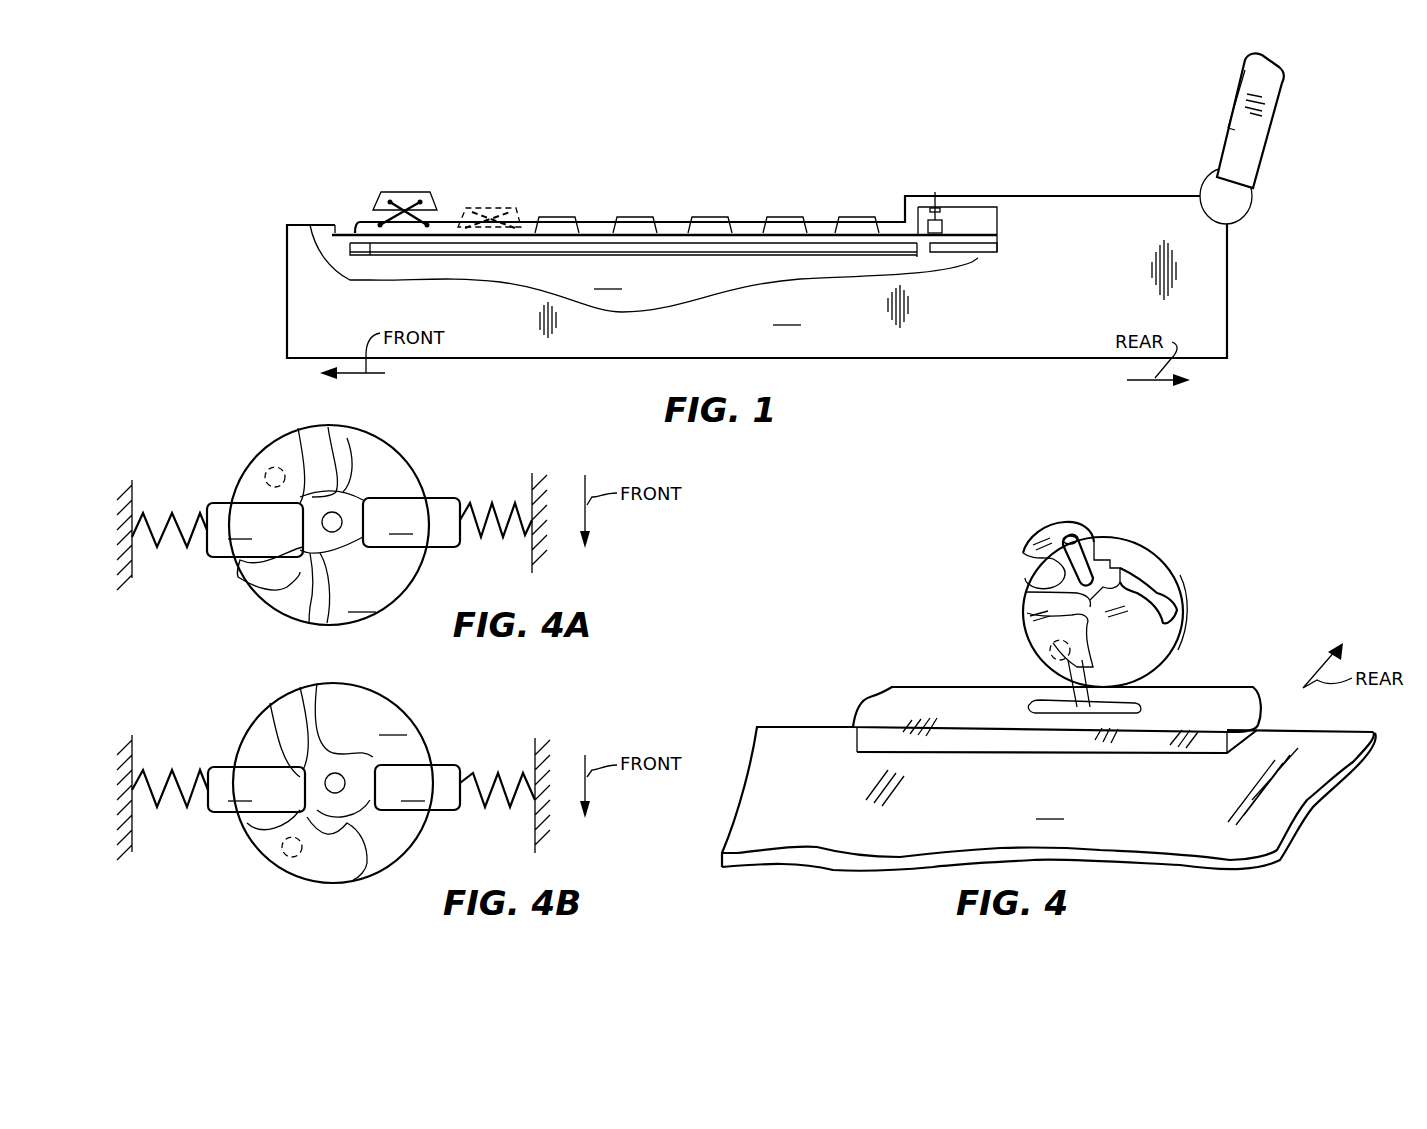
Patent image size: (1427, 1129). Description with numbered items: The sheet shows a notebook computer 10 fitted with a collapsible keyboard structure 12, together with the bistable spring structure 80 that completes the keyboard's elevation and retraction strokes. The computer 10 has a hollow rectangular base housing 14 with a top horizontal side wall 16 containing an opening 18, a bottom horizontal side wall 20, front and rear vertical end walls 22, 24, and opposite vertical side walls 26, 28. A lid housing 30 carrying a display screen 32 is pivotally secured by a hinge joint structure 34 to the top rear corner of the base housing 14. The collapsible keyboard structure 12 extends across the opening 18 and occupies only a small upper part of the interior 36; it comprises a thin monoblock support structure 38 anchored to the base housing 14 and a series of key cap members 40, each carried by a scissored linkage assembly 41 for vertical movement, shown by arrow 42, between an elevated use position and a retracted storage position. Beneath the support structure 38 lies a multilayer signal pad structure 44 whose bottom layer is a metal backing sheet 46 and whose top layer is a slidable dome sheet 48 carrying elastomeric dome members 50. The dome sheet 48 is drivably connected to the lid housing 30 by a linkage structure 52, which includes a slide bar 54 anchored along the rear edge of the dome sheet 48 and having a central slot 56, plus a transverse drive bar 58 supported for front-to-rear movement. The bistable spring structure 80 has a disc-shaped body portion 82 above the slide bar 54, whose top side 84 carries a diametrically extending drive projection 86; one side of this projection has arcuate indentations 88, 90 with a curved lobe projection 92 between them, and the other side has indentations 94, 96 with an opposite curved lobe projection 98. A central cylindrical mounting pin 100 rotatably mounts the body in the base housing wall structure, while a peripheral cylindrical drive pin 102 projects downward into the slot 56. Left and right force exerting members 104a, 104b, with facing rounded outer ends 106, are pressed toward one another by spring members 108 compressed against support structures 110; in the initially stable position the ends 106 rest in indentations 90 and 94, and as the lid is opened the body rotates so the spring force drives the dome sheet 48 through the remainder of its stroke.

In FIG. 1, the notebook computer 10 is at (1290, 266).
In FIG. 1, the collapsible keyboard structure 12 is at (680, 182).
In FIG. 1, the base housing 14 is at (283, 288).
In FIG. 1, the top horizontal side wall 16 is at (291, 224).
In FIG. 1, the opening 18 is at (372, 257).
In FIG. 1, the bottom horizontal side wall 20 is at (927, 360).
In FIG. 1, the front vertical end wall 22 is at (285, 322).
In FIG. 1, the rear vertical end wall 24 is at (1230, 325).
In FIG. 1, the vertical side wall 26 is at (607, 277).
In FIG. 1, the vertical side wall 28 is at (786, 313).
In FIG. 1, the lid housing 30 is at (1252, 120).
In FIG. 1, the display screen 32 is at (1222, 133).
In FIG. 1, the hinge joint structure 34 is at (1250, 212).
In FIG. 1, the interior 36 is at (676, 280).
In FIG. 1, the monoblock support structure 38 is at (756, 226).
In FIG. 1, the key cap members 40 is at (373, 203).
In FIG. 1, the scissored linkage assembly 41 is at (393, 200).
In FIG. 1, the arrow 42 is at (490, 185).
In FIG. 1, the multilayer signal pad structure 44 is at (334, 249).
In FIG. 1, the metal backing sheet 46 is at (463, 256).
In FIG. 1, the dome sheet 48 is at (342, 232).
In FIG. 4, the dome sheet 48 is at (1049, 794).
In FIG. 1, the elastomeric dome members 50 is at (628, 214).
In FIG. 1, the linkage structure 52 is at (972, 270).
In FIG. 1, the slide bar 54 is at (947, 224).
In FIG. 4, the slide bar 54 is at (1262, 707).
In FIG. 4, the central slot 56 is at (1112, 713).
In FIG. 1, the drive bar 58 is at (998, 224).
In FIG. 1, the bistable spring structure 80 is at (935, 180).
In FIG. 4A, the bistable spring structure 80 is at (425, 440).
In FIG. 4B, the bistable spring structure 80 is at (442, 702).
In FIG. 4, the bistable spring structure 80 is at (1233, 478).
In FIG. 4A, the disc-shaped body portion 82 is at (387, 610).
In FIG. 4B, the disc-shaped body portion 82 is at (370, 683).
In FIG. 4, the disc-shaped body portion 82 is at (1270, 598).
In FIG. 4A, the top side 84 is at (329, 525).
In FIG. 4B, the top side 84 is at (333, 783).
In FIG. 4, the top side 84 is at (1193, 568).
In FIG. 4A, the drive projection 86 is at (378, 445).
In FIG. 4B, the drive projection 86 is at (407, 853).
In FIG. 4, the drive projection 86 is at (1050, 533).
In FIG. 4A, the arcuate indentation 88 is at (327, 445).
In FIG. 4B, the arcuate indentation 88 is at (273, 723).
In FIG. 4, the arcuate indentation 88 is at (1028, 583).
In FIG. 4A, the arcuate indentation 90 is at (251, 572).
In FIG. 4B, the arcuate indentation 90 is at (318, 837).
In FIG. 4, the arcuate indentation 90 is at (1037, 633).
In FIG. 4A, the curved lobe projection 92 is at (297, 435).
In FIG. 4B, the curved lobe projection 92 is at (273, 837).
In FIG. 4, the curved lobe projection 92 is at (1030, 613).
In FIG. 4A, the arcuate indentation 94 is at (406, 474).
In FIG. 4B, the arcuate indentation 94 is at (317, 737).
In FIG. 4, the arcuate indentation 94 is at (1140, 533).
In FIG. 4A, the arcuate indentation 96 is at (321, 623).
In FIG. 4B, the arcuate indentation 96 is at (427, 760).
In FIG. 4, the arcuate indentation 96 is at (1240, 578).
In FIG. 4A, the curved lobe projection 98 is at (419, 556).
In FIG. 4B, the curved lobe projection 98 is at (420, 743).
In FIG. 4, the curved lobe projection 98 is at (1215, 530).
In FIG. 4A, the central cylindrical mounting pin 100 is at (340, 515).
In FIG. 4B, the central cylindrical mounting pin 100 is at (330, 790).
In FIG. 4, the central cylindrical mounting pin 100 is at (1085, 537).
In FIG. 4A, the peripheral cylindrical drive pin 102 is at (260, 471).
In FIG. 4B, the peripheral cylindrical drive pin 102 is at (288, 866).
In FIG. 4, the peripheral cylindrical drive pin 102 is at (1070, 705).
In FIG. 4A, the left force exerting member 104a is at (255, 530).
In FIG. 4B, the left force exerting member 104a is at (256, 789).
In FIG. 4A, the right force exerting member 104b is at (411, 522).
In FIG. 4B, the right force exerting member 104b is at (417, 787).
In FIG. 4A, the rounded outer ends 106 is at (287, 577).
In FIG. 4B, the rounded outer ends 106 is at (313, 690).
In FIG. 4A, the spring members 108 is at (153, 517).
In FIG. 4B, the spring members 108 is at (183, 772).
In FIG. 4A, the support structures 110 is at (133, 579).
In FIG. 4B, the support structures 110 is at (137, 845).